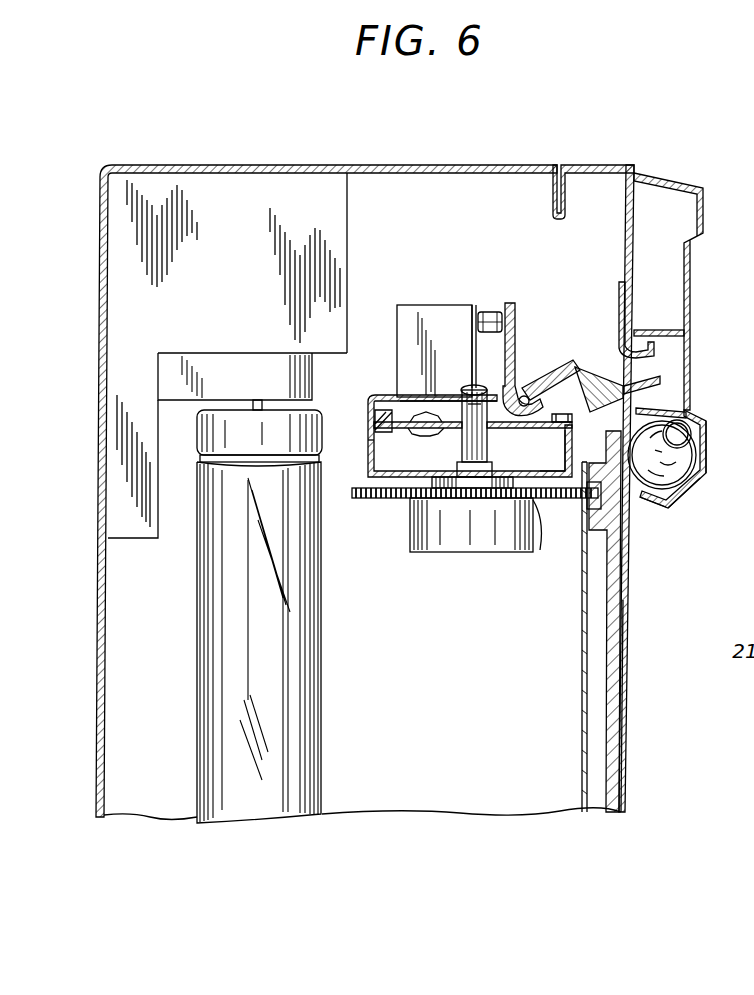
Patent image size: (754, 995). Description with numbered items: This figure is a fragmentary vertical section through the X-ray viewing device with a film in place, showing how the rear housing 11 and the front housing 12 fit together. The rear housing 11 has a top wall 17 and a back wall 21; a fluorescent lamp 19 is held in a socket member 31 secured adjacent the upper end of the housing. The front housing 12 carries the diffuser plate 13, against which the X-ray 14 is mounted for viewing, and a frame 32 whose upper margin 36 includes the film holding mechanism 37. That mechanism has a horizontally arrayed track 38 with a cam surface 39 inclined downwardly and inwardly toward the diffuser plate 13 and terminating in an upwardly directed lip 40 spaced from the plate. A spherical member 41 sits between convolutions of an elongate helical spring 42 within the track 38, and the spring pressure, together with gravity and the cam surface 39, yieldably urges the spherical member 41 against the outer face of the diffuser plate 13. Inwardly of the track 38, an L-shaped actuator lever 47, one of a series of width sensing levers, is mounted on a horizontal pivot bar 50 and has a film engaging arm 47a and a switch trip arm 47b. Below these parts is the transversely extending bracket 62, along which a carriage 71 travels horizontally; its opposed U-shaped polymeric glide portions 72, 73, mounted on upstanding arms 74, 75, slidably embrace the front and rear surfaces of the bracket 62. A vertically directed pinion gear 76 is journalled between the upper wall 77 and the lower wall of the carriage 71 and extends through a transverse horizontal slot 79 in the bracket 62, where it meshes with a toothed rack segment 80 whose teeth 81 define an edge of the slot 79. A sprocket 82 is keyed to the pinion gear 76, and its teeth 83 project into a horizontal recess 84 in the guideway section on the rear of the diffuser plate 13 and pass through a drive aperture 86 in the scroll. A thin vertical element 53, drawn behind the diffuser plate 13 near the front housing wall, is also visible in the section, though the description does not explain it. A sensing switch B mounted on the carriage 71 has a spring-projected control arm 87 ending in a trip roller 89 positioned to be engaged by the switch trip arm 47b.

The rear housing 11 is at (365, 466).
The front housing 12 is at (621, 163).
The diffuser plate 13 is at (613, 660).
The X-ray 14 is at (624, 610).
The top wall 17 is at (336, 165).
The fluorescent lamp 19 is at (302, 612).
The back wall 21 is at (100, 608).
The socket member 31 is at (264, 366).
The frame 32 is at (682, 276).
The upper margin 36 is at (690, 292).
The film holding mechanism 37 is at (681, 493).
The track 38 is at (672, 510).
The cam surface 39 is at (690, 515).
The lip 40 is at (648, 500).
The spherical member 41 is at (694, 456).
The helical spring 42 is at (690, 435).
The actuator lever 47 is at (566, 368).
The film engaging arm 47a is at (612, 390).
The switch trip arm 47b is at (516, 318).
The pivot bar 50 is at (522, 395).
The plate 53 is at (582, 650).
The bracket 62 is at (550, 418).
The carriage 71 is at (462, 430).
The glide portion 72 is at (552, 436).
The glide portion 73 is at (380, 410).
The upstanding arm 74 is at (574, 455).
The upstanding arm 75 is at (368, 442).
The pinion gear 76 is at (462, 448).
The upper wall 77 is at (430, 400).
The slot 79 is at (496, 429).
The rack segment 80 is at (420, 434).
The teeth 81 is at (468, 408).
The sprocket 82 is at (526, 553).
The teeth 83 is at (358, 498).
The recess 84 is at (543, 500).
The drive aperture 86 is at (587, 491).
The control arm 87 is at (476, 310).
The trip roller 89 is at (492, 314).
The sensing switch B is at (436, 306).